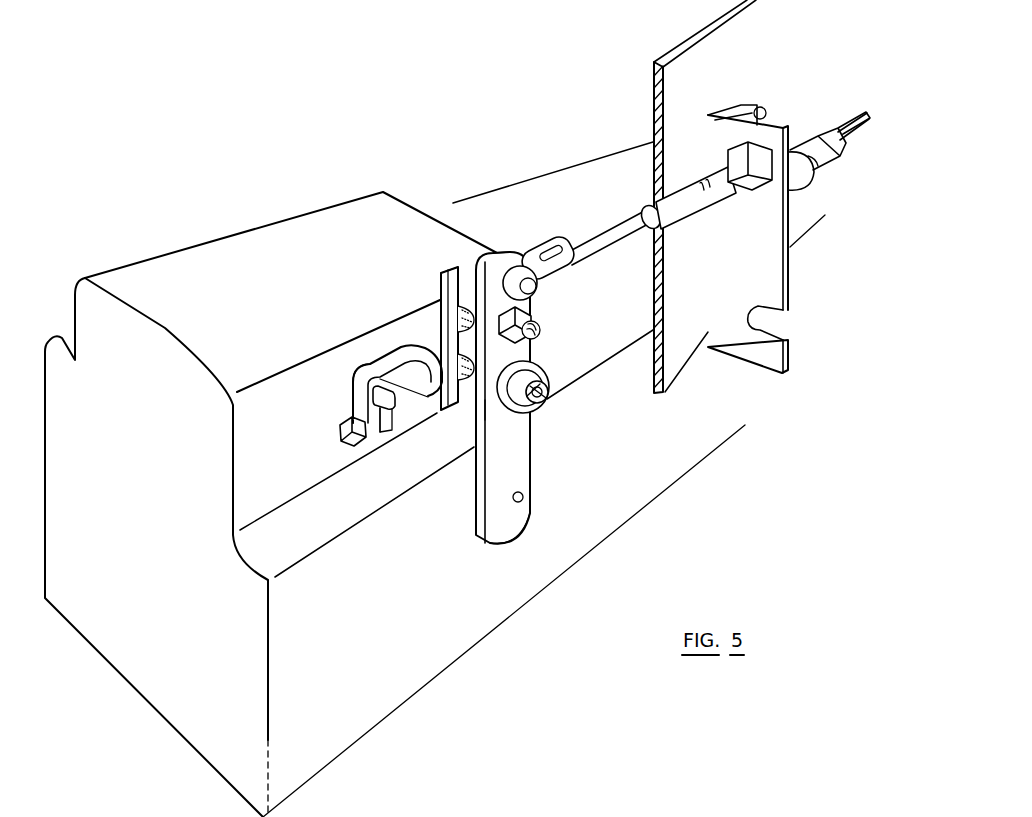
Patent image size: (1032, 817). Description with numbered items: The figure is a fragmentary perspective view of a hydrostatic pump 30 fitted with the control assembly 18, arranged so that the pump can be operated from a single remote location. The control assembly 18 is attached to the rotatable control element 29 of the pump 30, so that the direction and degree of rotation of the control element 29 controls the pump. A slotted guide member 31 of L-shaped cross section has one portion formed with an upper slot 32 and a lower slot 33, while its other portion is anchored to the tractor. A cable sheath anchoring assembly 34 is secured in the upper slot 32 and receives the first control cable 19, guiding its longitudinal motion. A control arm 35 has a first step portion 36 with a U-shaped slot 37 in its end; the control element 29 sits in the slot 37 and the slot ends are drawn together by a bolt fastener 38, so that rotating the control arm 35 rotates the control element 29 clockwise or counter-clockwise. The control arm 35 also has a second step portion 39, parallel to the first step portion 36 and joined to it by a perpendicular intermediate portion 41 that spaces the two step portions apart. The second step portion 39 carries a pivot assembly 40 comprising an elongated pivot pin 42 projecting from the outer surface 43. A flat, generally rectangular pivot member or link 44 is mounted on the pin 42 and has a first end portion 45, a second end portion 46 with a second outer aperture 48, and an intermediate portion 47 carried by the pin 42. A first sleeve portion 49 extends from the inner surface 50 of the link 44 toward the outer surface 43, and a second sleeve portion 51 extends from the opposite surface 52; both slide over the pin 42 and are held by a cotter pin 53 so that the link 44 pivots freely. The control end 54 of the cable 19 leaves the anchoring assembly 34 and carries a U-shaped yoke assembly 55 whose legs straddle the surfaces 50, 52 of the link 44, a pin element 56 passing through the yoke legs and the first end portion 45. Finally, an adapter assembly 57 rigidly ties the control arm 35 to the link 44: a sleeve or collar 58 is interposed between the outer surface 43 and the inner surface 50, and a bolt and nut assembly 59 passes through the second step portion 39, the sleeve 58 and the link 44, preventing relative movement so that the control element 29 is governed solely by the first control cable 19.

The control assembly 18 is at (581, 150).
The first control cable 19 is at (845, 124).
The rotatable control element 29 is at (398, 417).
The hydrostatic pump 30 is at (294, 226).
The slotted guide member 31 is at (773, 239).
The upper slot 32 is at (798, 176).
The lower slot 33 is at (783, 323).
The cable sheath anchoring assembly 34 is at (708, 173).
The control arm 35 is at (352, 352).
The first step portion 36 is at (358, 383).
The U-shaped slot 37 is at (383, 432).
The bolt fastener 38 is at (343, 430).
The second step portion 39 is at (453, 283).
The pivot assembly 40 is at (553, 428).
The intermediate portion 41 is at (365, 406).
The pivot pin 42 is at (541, 403).
The outer surface 43 is at (425, 321).
The pivot member or link 44 is at (546, 477).
The first end portion 45 is at (502, 252).
The second end portion 46 is at (508, 520).
The intermediate portion 47 is at (495, 403).
The second outer aperture 48 is at (524, 499).
The first sleeve portion 49 is at (455, 365).
The surface of the pivot member 50 is at (515, 411).
The second sleeve or collar portion 51 is at (525, 370).
The opposite surface 52 is at (520, 455).
The cotter pin 53 is at (545, 393).
The control end of the cable 54 is at (612, 238).
The U-shaped yoke assembly 55 is at (548, 246).
The pin element 56 is at (531, 288).
The adapter assembly 57 is at (455, 322).
The sleeve or collar 58 is at (467, 297).
The bolt and nut assembly 59 is at (538, 332).